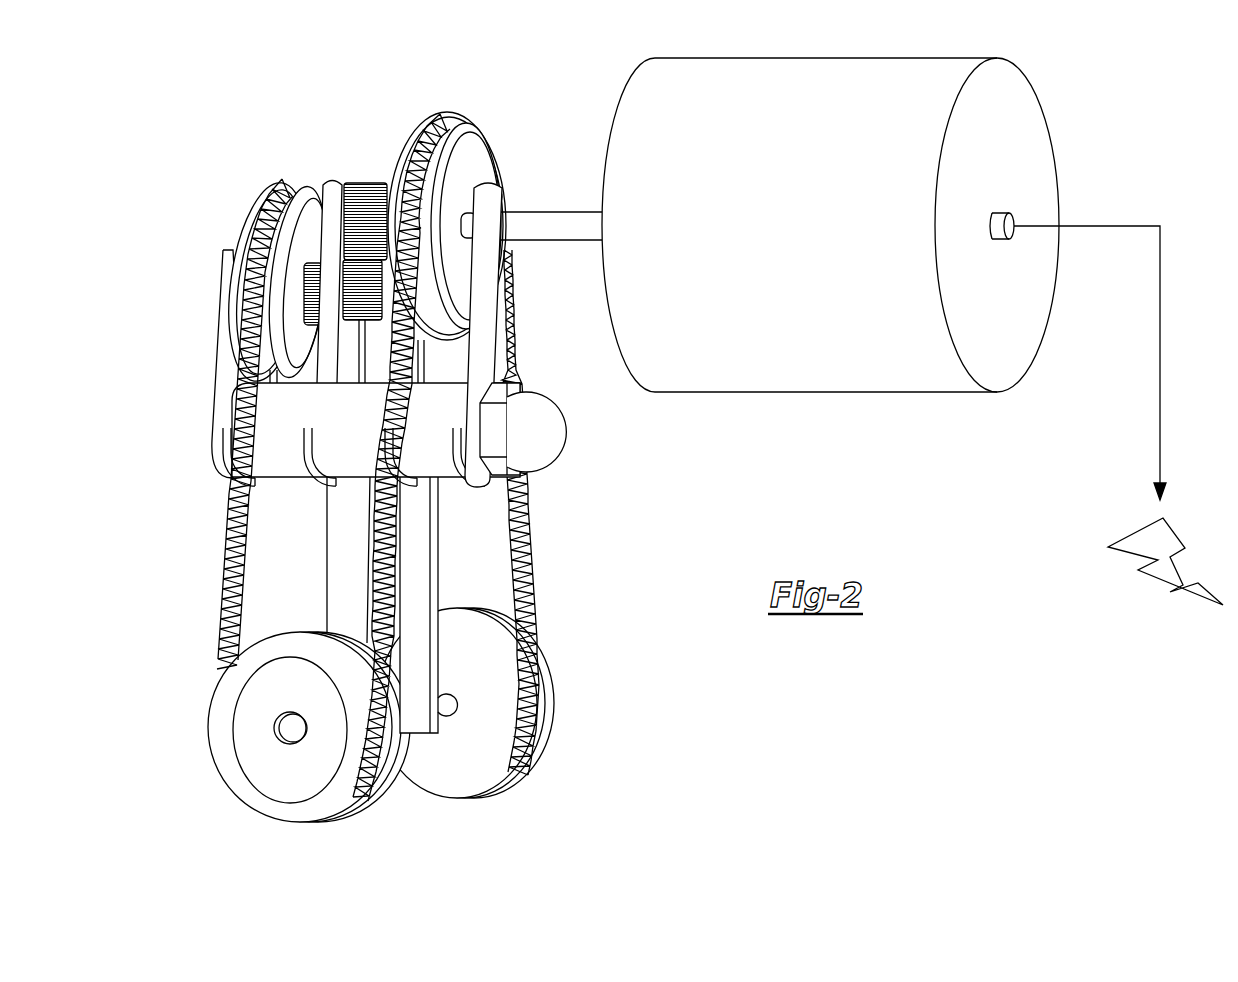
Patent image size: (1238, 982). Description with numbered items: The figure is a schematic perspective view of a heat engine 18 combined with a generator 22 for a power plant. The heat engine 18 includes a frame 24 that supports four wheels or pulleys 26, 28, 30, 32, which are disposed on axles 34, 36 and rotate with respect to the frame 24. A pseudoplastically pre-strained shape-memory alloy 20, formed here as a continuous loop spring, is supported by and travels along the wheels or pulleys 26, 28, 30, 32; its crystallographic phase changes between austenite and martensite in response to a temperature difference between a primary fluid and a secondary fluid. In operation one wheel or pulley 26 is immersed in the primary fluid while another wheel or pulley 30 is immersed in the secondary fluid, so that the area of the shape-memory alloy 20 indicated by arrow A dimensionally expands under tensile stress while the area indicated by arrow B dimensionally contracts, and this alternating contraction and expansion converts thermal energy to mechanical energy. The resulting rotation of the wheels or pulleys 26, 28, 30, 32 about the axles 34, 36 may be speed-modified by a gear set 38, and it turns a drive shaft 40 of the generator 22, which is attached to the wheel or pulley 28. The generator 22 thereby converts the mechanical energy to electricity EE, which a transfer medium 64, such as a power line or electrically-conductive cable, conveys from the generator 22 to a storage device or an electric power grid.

The heat engine 18 is at (172, 100).
The shape-memory alloy 20 is at (233, 563).
The generator 22 is at (630, 84).
The frame 24 is at (328, 603).
The wheel or pulley 26 is at (558, 718).
The wheel or pulley 28 is at (493, 142).
The wheel or pulley 30 is at (253, 810).
The wheel or pulley 32 is at (244, 213).
The axle 34 is at (446, 716).
The axle 36 is at (467, 212).
The gear set 38 is at (372, 183).
The drive shaft 40 is at (556, 212).
The transfer medium 64 is at (1112, 224).
The arrow A is at (540, 564).
The arrow B is at (410, 565).
The electricity EE is at (1155, 573).